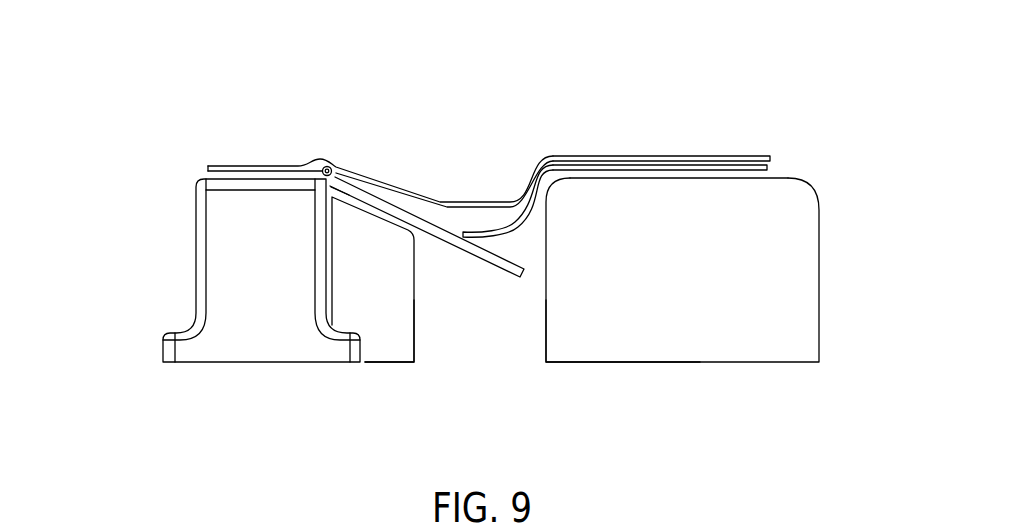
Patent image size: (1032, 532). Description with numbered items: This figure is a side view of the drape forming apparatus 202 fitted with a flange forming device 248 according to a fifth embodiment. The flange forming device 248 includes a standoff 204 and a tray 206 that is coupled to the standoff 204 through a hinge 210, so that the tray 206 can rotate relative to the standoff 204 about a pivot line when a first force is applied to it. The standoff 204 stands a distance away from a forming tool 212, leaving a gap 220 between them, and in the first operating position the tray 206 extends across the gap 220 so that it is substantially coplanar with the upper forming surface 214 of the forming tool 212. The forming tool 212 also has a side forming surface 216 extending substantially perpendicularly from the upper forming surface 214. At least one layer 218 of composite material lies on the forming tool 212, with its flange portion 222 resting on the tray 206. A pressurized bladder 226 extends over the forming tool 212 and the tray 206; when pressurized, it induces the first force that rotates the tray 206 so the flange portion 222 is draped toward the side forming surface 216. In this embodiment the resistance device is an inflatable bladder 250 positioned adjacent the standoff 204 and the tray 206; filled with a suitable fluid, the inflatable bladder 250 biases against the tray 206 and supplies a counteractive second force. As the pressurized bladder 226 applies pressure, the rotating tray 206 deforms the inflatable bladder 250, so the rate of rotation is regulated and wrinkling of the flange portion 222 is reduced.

The drape forming apparatus 202 is at (703, 72).
The standoff 204 is at (196, 238).
The tray 206 is at (495, 265).
The hinge 210 is at (334, 162).
The forming tool 212 is at (820, 208).
The upper forming surface 214 is at (788, 177).
The side forming surface 216 is at (547, 342).
The layer of composite material 218 is at (769, 168).
The gap 220 is at (440, 350).
The flange portion 222 is at (513, 226).
The pressurized bladder 226 is at (740, 155).
The flange forming device 248 is at (142, 170).
The inflatable bladder 250 is at (391, 285).